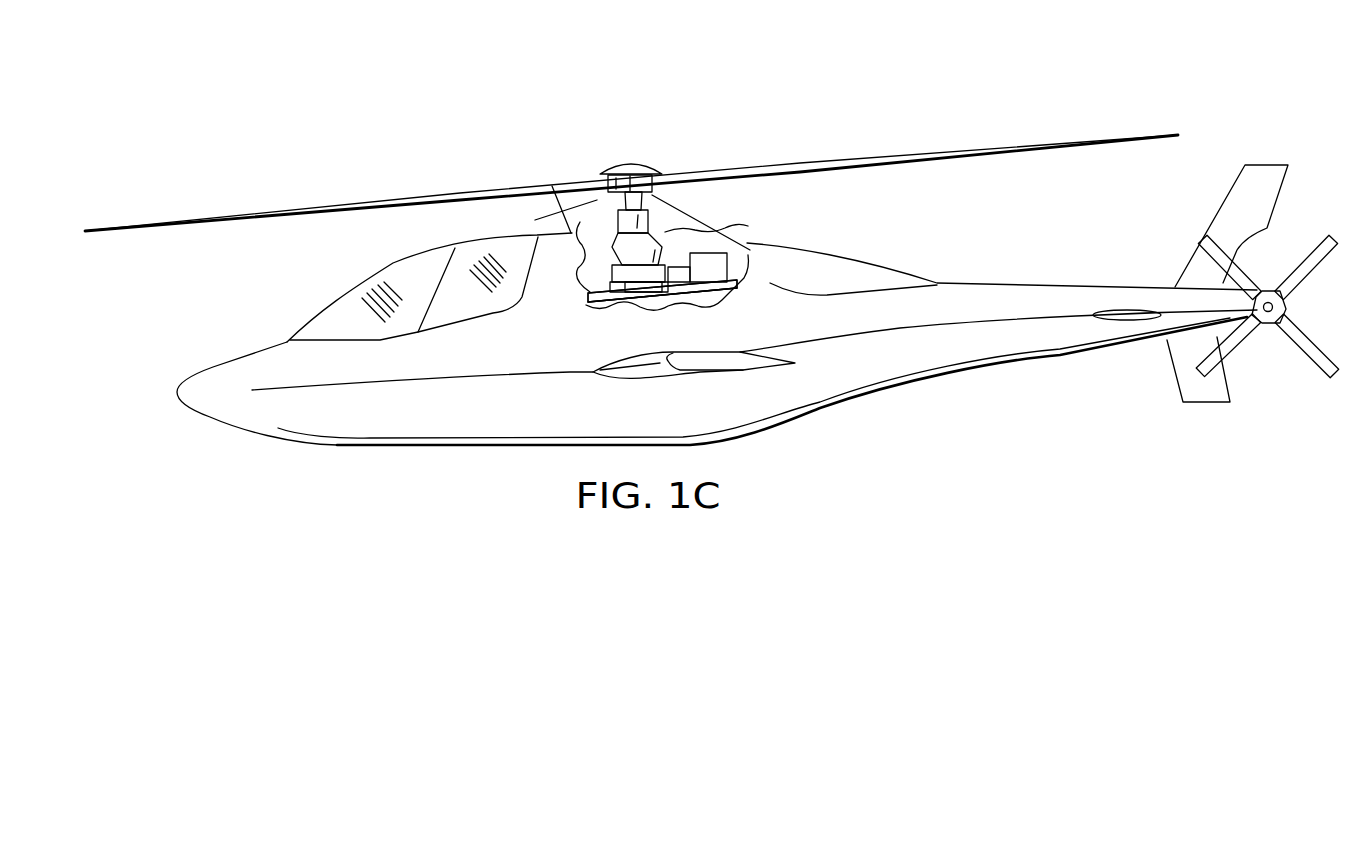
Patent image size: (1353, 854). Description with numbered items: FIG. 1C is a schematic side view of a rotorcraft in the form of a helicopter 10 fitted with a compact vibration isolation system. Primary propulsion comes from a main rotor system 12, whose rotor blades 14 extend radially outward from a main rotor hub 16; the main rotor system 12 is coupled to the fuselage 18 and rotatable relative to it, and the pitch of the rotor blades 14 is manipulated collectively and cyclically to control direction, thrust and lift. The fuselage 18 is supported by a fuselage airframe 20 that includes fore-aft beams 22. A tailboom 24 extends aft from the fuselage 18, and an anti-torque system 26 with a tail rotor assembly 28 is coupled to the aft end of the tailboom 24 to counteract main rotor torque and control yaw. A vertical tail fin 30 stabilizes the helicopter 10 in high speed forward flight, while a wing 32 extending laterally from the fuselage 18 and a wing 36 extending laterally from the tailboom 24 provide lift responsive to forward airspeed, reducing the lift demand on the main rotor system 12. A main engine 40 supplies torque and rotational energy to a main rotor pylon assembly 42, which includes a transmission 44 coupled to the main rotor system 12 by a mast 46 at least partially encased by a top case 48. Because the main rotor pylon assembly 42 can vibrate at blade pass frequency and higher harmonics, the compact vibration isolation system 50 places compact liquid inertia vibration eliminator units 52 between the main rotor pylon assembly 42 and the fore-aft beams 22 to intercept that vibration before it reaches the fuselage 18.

The helicopter 10 is at (426, 86).
The main rotor system 12 is at (648, 154).
The rotor blades 14 is at (90, 227).
The main rotor hub 16 is at (628, 165).
The fuselage 18 is at (257, 435).
The fuselage airframe 20 is at (642, 300).
The fore-aft beams 22 is at (662, 291).
The tailboom 24 is at (1018, 368).
The anti-torque system 26 is at (1306, 365).
The tail rotor assembly 28 is at (1273, 297).
The vertical tail fin 30 is at (1223, 200).
The wing 32 is at (757, 370).
The wing 36 is at (1120, 312).
The main engine 40 is at (748, 263).
The main rotor pylon assembly 42 is at (610, 231).
The transmission 44 is at (613, 275).
The mast 46 is at (675, 166).
The top case 48 is at (740, 232).
The compact vibration isolation system 50 is at (598, 286).
The compact liquid inertia vibration eliminator units 52 is at (697, 304).